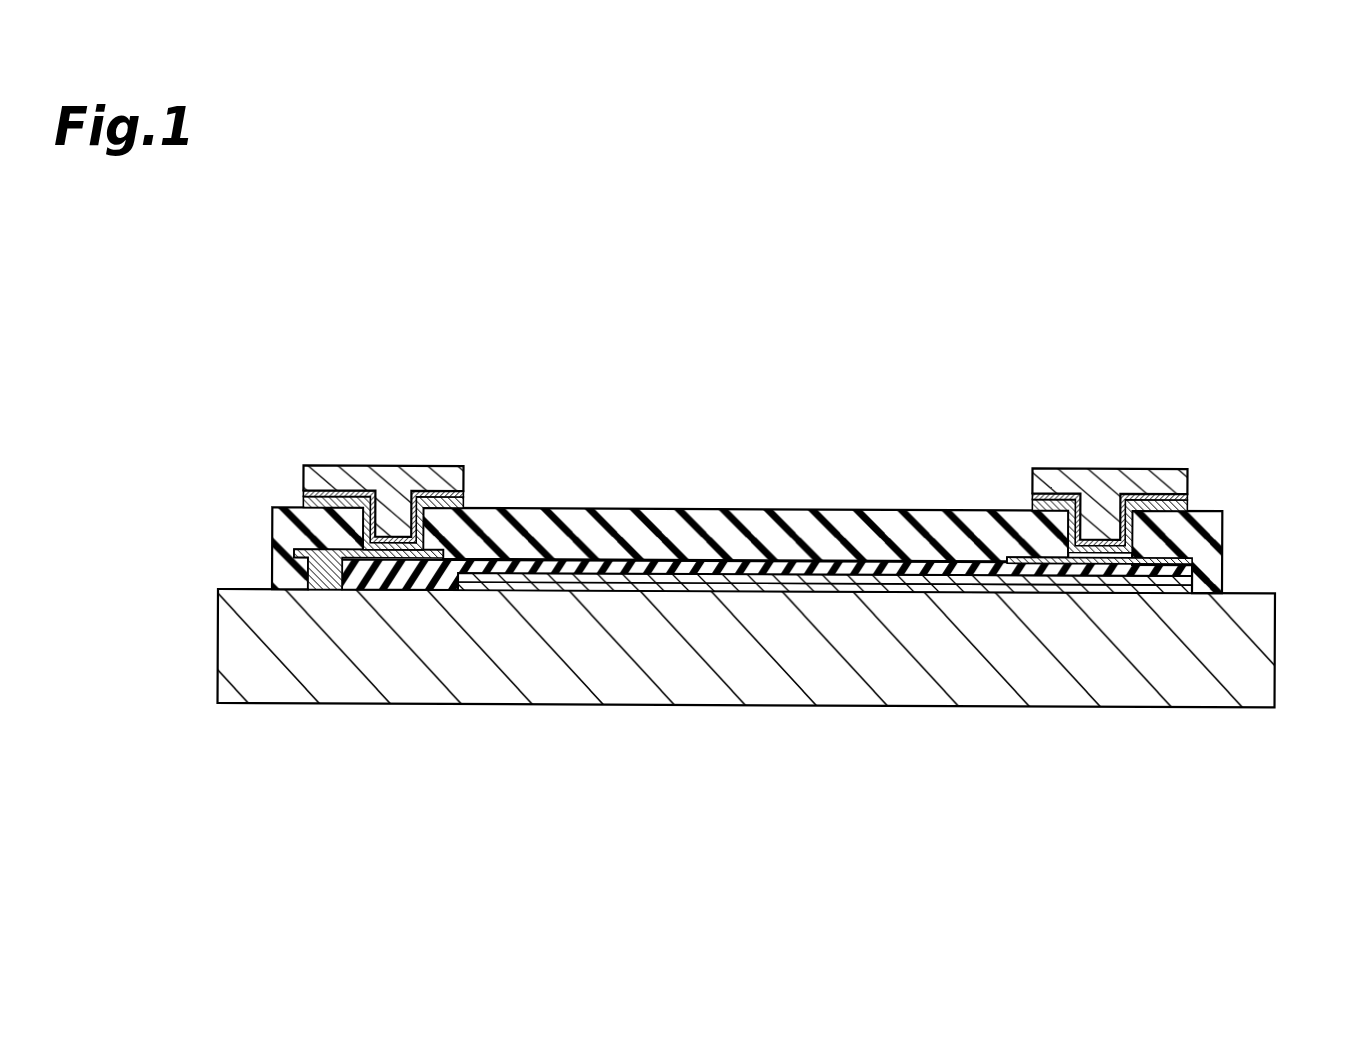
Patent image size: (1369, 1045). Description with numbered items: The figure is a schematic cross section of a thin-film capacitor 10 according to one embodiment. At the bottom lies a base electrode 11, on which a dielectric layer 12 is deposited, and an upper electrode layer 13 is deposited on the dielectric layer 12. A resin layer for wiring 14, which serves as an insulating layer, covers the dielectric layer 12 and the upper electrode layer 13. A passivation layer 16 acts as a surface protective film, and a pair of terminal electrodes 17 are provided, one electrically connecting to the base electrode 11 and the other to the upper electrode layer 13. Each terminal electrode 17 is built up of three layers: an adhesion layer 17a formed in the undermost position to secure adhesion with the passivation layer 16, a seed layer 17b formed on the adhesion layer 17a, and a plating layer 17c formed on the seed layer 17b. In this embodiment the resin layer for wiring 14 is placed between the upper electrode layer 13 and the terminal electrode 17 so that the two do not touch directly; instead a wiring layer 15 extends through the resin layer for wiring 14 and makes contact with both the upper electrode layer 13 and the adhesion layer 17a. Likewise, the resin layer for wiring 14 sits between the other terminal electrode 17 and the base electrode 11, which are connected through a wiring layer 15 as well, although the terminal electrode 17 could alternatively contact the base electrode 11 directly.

The thin-film capacitor 10 is at (747, 518).
The base electrode 11 is at (1260, 656).
The dielectric layer 12 is at (1184, 589).
The upper electrode layer 13 is at (1189, 580).
The resin layer for wiring 14 is at (400, 578).
The wiring layer 15 is at (320, 573).
The passivation layer 16 is at (766, 535).
The terminal electrode 17 is at (747, 476).
The adhesion layer 17a is at (305, 505).
The seed layer 17b is at (308, 494).
The plating layer 17c is at (308, 480).